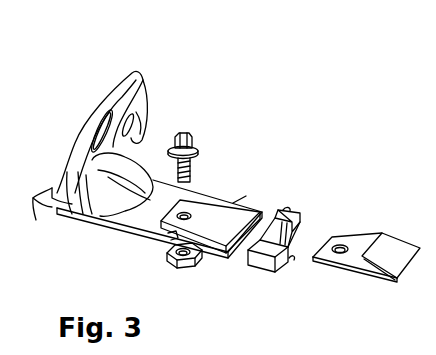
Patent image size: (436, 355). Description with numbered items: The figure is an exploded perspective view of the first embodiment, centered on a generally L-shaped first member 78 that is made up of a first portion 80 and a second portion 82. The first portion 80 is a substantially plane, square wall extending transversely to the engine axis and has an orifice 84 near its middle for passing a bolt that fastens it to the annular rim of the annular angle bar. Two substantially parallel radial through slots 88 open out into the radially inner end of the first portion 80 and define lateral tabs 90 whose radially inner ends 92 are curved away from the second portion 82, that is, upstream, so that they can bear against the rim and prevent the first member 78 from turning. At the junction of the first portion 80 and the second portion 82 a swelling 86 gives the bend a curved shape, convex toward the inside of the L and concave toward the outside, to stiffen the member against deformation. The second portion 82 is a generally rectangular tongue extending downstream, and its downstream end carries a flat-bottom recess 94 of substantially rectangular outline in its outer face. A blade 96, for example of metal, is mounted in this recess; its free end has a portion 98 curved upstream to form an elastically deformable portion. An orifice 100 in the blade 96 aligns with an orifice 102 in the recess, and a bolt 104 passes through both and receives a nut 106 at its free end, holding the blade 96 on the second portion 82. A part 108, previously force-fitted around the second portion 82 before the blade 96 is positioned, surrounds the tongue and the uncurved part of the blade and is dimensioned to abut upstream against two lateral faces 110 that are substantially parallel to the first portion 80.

The first member 78 is at (153, 58).
The first portion 80 is at (90, 98).
The second portion 82 is at (130, 249).
The orifice 84 is at (118, 110).
The swelling 86 is at (118, 190).
The radial through slots 88 is at (138, 131).
The lateral tabs 90 is at (138, 110).
The radially inner ends 92 is at (33, 207).
The flat-bottom recess 94 is at (233, 203).
The blade 96 is at (360, 284).
The curved portion 98 is at (399, 237).
The orifice 100 is at (338, 253).
The orifice 102 is at (186, 212).
The bolt 104 is at (205, 137).
The nut 106 is at (197, 279).
The part 108 is at (255, 273).
The lateral faces 110 is at (236, 220).